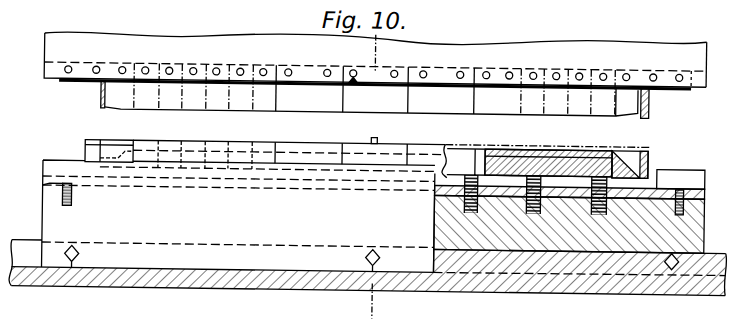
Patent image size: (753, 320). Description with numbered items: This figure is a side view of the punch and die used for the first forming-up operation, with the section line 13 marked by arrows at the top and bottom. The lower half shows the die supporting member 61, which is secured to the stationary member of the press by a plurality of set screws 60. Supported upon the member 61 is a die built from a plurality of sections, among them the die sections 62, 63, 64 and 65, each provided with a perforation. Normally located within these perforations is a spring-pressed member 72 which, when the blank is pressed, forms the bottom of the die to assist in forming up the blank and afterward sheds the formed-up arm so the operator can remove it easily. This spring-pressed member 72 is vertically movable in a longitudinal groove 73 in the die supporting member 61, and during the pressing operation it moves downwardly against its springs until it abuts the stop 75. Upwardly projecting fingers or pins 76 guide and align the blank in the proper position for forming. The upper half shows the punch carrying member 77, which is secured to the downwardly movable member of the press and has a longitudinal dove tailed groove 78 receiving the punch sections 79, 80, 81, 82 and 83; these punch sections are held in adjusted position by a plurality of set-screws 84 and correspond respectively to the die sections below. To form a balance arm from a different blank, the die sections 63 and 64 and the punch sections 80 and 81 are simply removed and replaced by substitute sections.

The section line 13- 13 is at (385, 40).
The set screws 60 is at (72, 261).
The die supporting member 61 is at (232, 236).
The die section 62 is at (393, 145).
The die section 63 is at (211, 149).
The die section 64 is at (520, 150).
The die section 65 is at (125, 139).
The spring-pressed member 72 is at (618, 144).
The longitudinal groove 73 is at (43, 193).
The stop 75 is at (678, 180).
The fingers or pins 76 is at (368, 136).
The punch carrying member 77 is at (46, 44).
The dove tailed groove 78 is at (705, 68).
The punch section 79 is at (370, 96).
The punch section 80 is at (269, 101).
The punch section 81 is at (462, 102).
The punch section 82 is at (102, 95).
The punch section 83 is at (648, 95).
The set-screws 84 is at (214, 65).